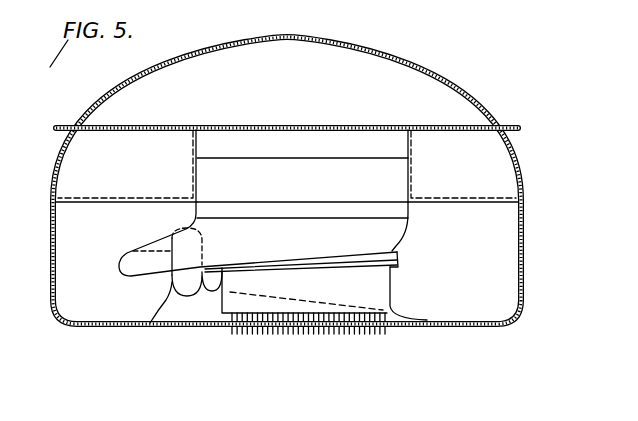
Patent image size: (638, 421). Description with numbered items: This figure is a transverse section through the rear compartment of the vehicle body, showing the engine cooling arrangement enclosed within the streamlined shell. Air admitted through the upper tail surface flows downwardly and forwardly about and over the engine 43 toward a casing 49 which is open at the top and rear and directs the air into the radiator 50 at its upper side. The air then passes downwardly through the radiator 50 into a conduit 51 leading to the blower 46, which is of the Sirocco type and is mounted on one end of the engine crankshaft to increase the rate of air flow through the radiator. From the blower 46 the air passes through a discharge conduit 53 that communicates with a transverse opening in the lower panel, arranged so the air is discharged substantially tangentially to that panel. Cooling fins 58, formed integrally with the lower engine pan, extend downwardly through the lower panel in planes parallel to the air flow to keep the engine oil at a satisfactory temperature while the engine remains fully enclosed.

The engine 43 is at (393, 251).
The blower 46 is at (183, 285).
The casing 49 is at (327, 154).
The radiator 50 is at (327, 210).
The conduit 51 is at (270, 245).
The discharge conduit 53 is at (208, 313).
The cooling fins 58 is at (328, 332).